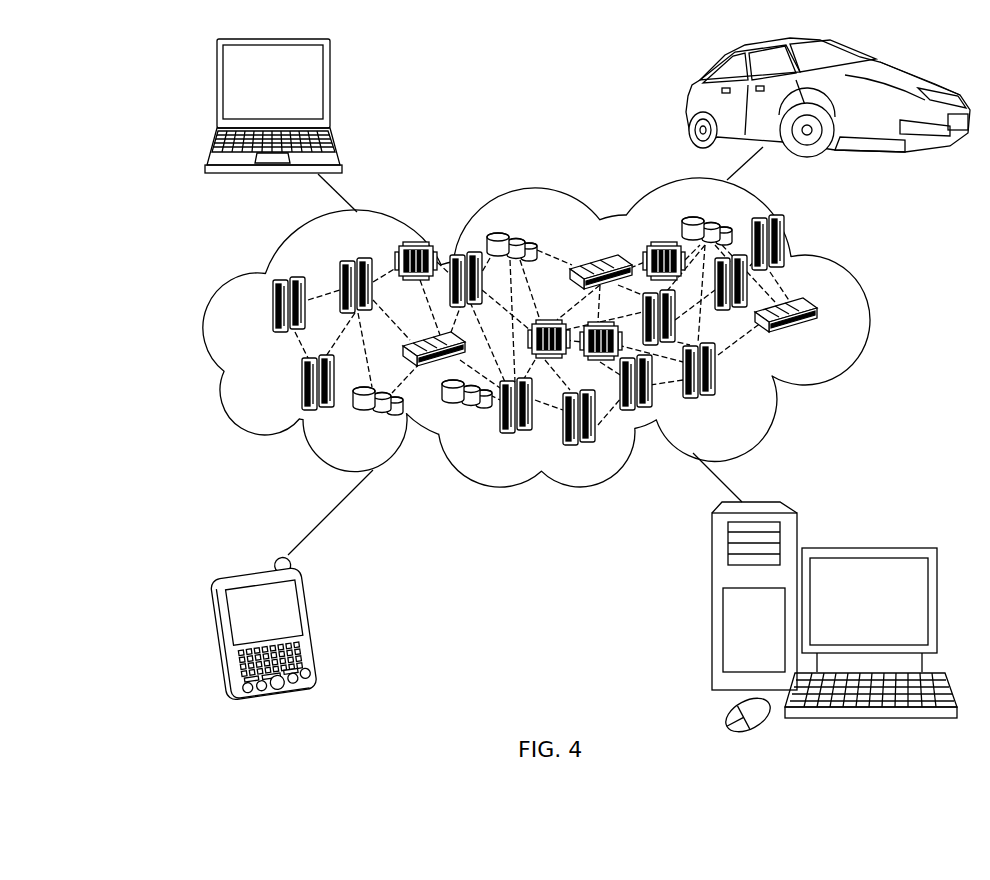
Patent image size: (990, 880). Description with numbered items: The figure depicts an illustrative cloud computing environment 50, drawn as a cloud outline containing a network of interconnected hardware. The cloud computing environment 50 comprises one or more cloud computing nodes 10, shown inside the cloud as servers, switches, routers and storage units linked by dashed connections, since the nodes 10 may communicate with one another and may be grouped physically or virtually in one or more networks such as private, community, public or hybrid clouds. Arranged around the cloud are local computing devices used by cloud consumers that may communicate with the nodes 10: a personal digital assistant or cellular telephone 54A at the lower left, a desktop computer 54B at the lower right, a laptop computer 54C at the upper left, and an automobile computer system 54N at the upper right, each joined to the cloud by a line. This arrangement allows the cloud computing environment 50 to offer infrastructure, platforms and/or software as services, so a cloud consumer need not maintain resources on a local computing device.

The cloud computing nodes 10 is at (827, 341).
The cloud computing environment 50 is at (868, 313).
The personal digital assistant or cellular telephone 54A is at (322, 625).
The desktop computer 54B is at (867, 548).
The laptop computer 54C is at (330, 90).
The automobile computer system 54N is at (688, 100).